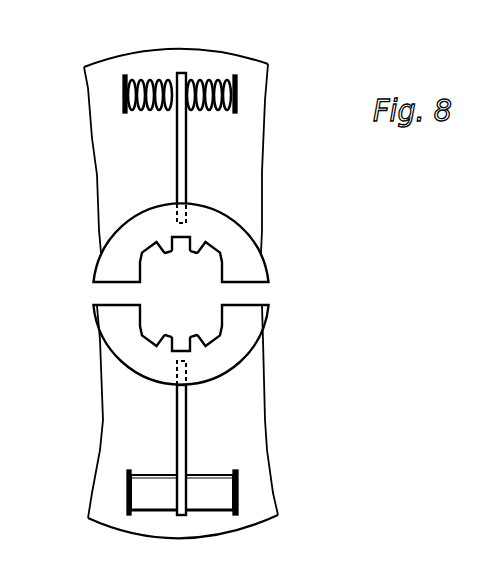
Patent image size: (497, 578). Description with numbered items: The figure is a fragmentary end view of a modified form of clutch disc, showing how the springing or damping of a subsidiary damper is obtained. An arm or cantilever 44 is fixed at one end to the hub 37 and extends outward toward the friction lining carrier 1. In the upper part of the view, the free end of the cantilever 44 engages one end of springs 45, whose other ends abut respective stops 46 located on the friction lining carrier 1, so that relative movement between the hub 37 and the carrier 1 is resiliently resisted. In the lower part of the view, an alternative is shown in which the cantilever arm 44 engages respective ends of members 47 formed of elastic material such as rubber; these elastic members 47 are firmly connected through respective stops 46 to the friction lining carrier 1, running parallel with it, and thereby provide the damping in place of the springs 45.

The friction lining carrier 1 is at (110, 145).
The hub 37 is at (112, 263).
The arm or cantilever 44 is at (186, 143).
The springs 45 is at (123, 85).
The stop 46 is at (123, 107).
The members formed of elastic material 47 is at (210, 488).